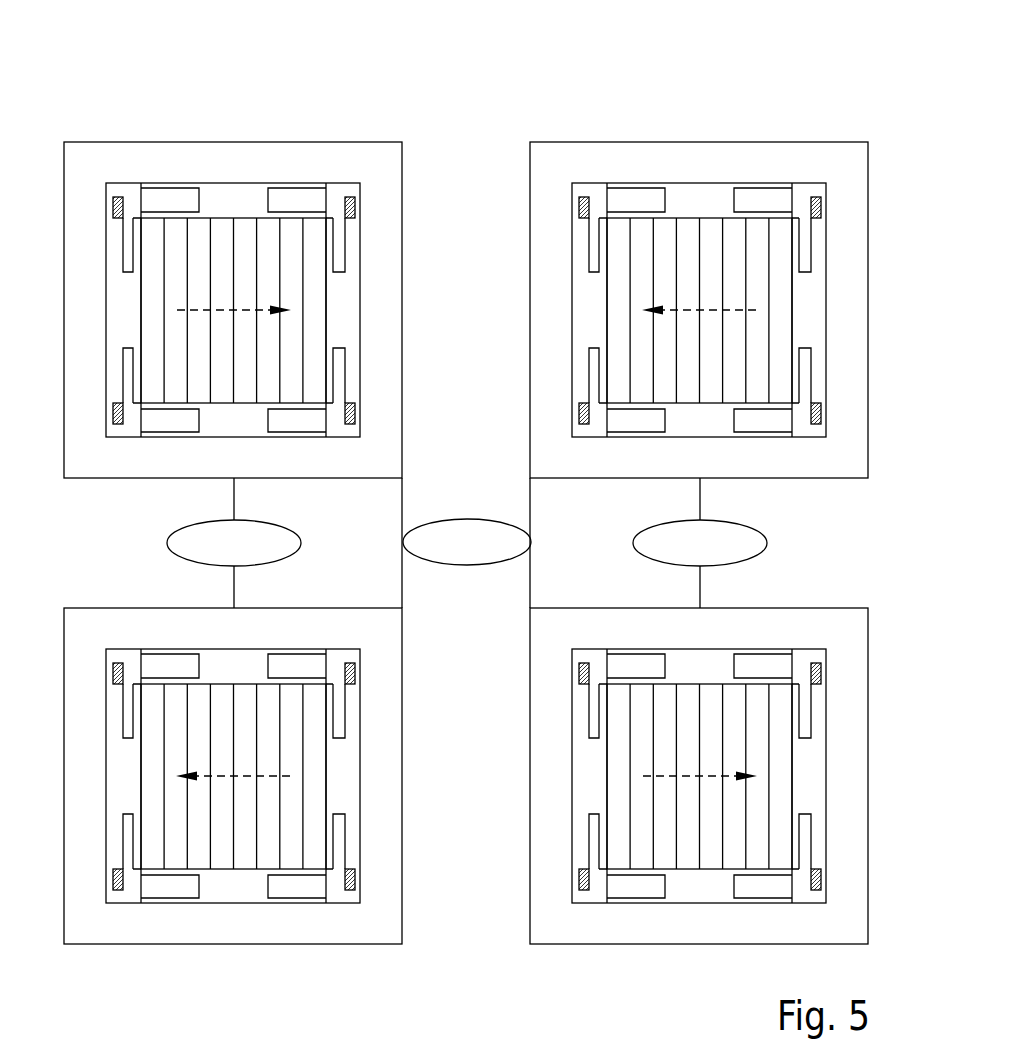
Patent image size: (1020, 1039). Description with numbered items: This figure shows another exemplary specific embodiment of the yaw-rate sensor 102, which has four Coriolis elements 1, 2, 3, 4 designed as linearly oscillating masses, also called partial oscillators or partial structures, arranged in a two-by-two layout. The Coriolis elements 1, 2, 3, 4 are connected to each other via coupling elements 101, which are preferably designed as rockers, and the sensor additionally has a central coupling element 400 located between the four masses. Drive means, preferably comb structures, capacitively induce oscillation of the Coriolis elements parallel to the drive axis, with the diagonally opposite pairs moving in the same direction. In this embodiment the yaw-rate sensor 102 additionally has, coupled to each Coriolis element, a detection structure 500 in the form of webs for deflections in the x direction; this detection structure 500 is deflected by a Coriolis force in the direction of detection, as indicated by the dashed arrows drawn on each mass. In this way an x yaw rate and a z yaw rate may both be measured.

The yaw-rate sensor 102 is at (298, 88).
The Coriolis element 1 is at (113, 146).
The Coriolis element 2 is at (699, 275).
The Coriolis element 3 is at (233, 811).
The Coriolis element 4 is at (699, 810).
The detection structure 500 is at (203, 225).
The coupling element 101 is at (167, 541).
The central coupling element 400 is at (467, 519).